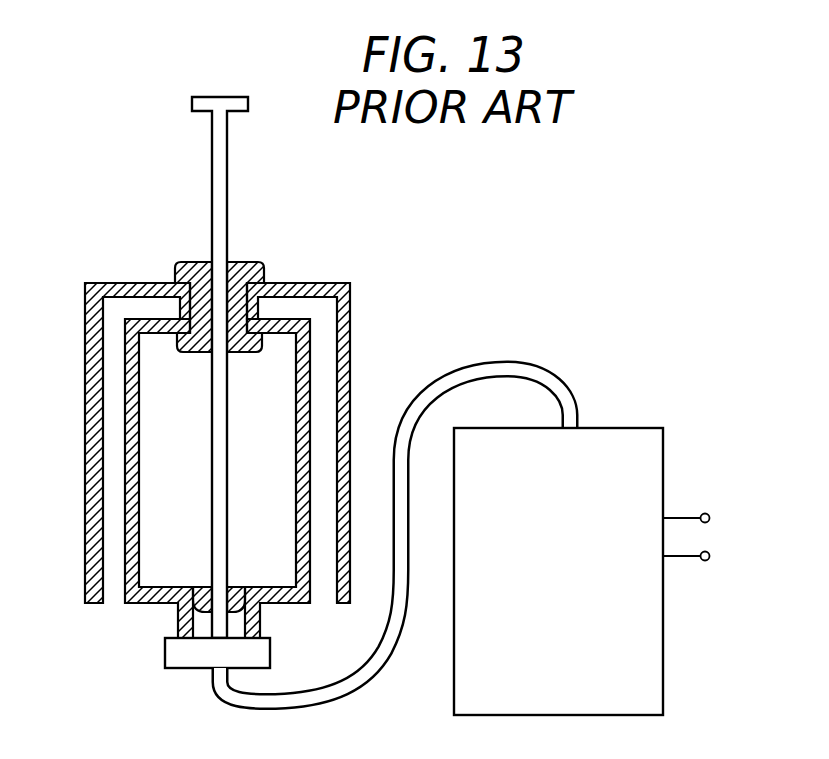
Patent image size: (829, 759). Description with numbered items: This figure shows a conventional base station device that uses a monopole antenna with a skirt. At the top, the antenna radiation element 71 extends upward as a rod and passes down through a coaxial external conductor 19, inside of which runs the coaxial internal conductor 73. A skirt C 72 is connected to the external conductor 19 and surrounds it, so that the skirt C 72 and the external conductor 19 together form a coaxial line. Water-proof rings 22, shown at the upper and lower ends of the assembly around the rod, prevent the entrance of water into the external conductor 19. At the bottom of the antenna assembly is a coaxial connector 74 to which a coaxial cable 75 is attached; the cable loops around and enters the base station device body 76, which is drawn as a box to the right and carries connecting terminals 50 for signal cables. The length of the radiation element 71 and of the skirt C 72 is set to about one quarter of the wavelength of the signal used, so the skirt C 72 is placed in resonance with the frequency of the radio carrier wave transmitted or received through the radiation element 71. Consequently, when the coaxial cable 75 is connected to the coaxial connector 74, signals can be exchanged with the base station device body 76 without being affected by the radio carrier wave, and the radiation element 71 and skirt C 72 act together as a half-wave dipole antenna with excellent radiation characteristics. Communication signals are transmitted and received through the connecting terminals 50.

The coaxial external conductor 19 is at (124, 357).
The water-proof rings 22 is at (244, 264).
The connecting terminals 50 is at (694, 513).
The antenna radiation element 71 is at (228, 163).
The skirt C 72 is at (85, 455).
The coaxial internal conductor 73 is at (212, 518).
The coaxial connector 74 is at (183, 668).
The coaxial cable 75 is at (468, 360).
The base station device body 76 is at (630, 428).